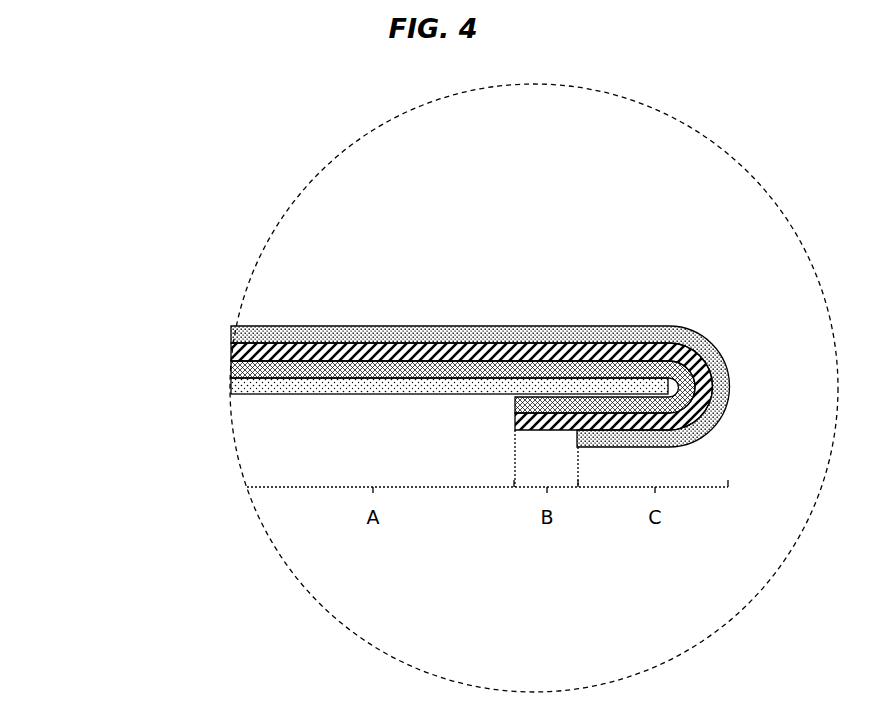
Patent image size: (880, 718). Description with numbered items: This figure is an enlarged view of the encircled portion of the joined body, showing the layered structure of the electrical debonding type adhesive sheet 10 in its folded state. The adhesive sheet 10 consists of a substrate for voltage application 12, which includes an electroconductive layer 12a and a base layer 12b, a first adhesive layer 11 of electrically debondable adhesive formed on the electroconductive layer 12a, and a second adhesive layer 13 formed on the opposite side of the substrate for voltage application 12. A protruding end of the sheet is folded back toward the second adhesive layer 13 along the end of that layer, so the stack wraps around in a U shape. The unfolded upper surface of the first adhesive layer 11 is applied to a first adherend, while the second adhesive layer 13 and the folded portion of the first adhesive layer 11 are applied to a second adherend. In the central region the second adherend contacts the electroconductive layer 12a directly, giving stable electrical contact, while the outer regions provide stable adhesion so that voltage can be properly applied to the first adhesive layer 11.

The electrical debonding type adhesive sheet 10 is at (374, 330).
The first adhesive layer 11 is at (237, 331).
The substrate for voltage application 12 is at (365, 366).
The electroconductive layer 12a is at (237, 347).
The base layer 12b is at (237, 362).
The second adhesive layer 13 is at (237, 390).